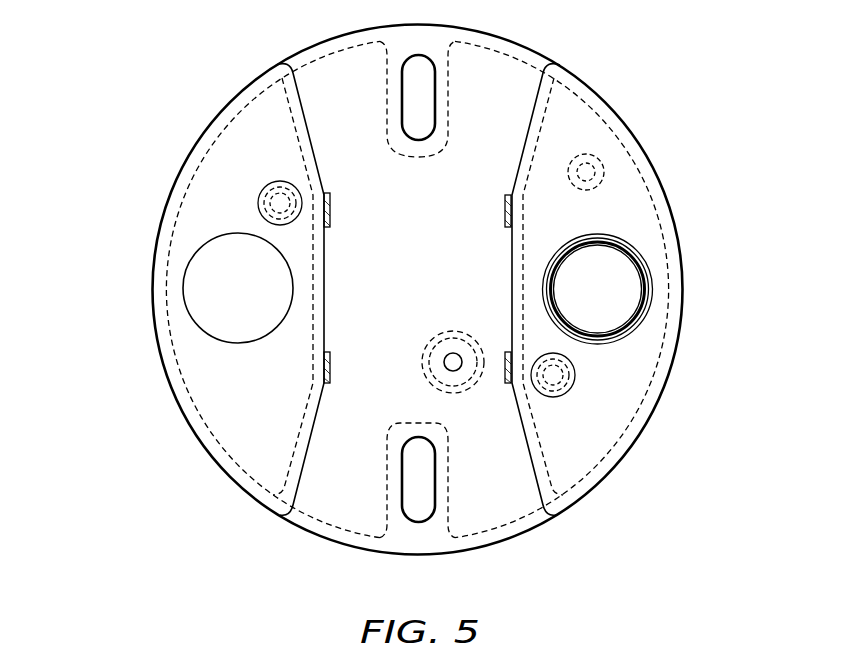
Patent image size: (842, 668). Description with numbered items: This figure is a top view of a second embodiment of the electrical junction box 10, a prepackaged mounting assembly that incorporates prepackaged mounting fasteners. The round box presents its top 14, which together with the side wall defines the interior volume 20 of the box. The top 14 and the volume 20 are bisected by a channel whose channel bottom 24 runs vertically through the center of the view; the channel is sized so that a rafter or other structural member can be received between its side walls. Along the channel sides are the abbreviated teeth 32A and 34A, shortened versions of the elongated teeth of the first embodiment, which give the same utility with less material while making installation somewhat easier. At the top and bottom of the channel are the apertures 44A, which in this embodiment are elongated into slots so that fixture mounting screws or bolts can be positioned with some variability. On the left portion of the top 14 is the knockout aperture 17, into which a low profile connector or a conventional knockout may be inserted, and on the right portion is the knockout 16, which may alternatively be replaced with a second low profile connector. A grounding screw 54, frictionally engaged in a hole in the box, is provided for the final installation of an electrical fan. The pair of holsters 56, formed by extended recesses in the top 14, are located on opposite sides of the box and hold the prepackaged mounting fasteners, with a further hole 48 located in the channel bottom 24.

The electrical junction box 10 is at (183, 91).
The top 14 is at (236, 425).
The knockout 16 is at (620, 303).
The knockout aperture 17 is at (213, 318).
The volume 20 is at (633, 200).
The channel bottom 24 is at (409, 287).
The tooth 32A is at (328, 195).
The tooth 34A is at (505, 212).
The apertures 44A is at (415, 95).
The central hole 48 is at (452, 362).
The grounding screw 54 is at (590, 168).
The holsters 56 is at (276, 202).